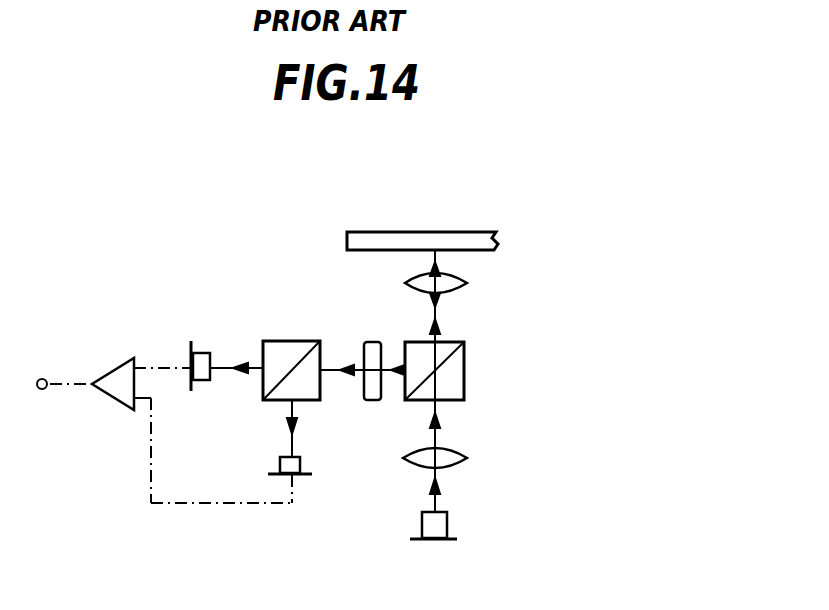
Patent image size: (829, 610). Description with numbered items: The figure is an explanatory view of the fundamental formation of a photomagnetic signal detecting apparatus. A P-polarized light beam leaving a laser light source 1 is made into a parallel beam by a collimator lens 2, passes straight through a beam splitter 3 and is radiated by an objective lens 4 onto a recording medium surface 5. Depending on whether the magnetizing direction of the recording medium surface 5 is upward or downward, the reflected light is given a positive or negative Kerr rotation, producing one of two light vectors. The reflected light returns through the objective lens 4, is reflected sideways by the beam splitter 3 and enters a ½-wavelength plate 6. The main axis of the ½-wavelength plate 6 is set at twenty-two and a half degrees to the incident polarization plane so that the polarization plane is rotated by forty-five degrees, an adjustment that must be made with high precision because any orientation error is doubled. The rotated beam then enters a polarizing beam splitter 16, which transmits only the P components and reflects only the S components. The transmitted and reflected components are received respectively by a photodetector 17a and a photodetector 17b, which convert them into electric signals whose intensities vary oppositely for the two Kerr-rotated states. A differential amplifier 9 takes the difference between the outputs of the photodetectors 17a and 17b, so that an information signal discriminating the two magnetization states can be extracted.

The laser light source 1 is at (440, 527).
The collimator lens 2 is at (448, 453).
The beam splitter 3 is at (456, 385).
The objective lens 4 is at (450, 289).
The recording medium surface 5 is at (473, 238).
The ½-wavelength plate 6 is at (372, 395).
The differential amplifier 9 is at (120, 398).
The polarizing beam splitter 16 is at (294, 333).
The photodetector 17a is at (200, 356).
The photodetector 17b is at (300, 472).